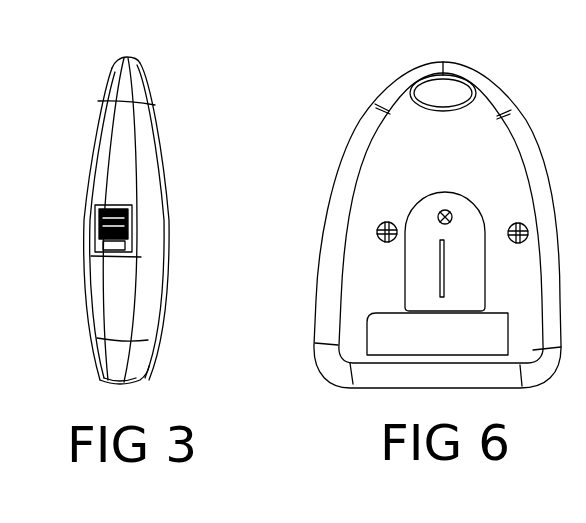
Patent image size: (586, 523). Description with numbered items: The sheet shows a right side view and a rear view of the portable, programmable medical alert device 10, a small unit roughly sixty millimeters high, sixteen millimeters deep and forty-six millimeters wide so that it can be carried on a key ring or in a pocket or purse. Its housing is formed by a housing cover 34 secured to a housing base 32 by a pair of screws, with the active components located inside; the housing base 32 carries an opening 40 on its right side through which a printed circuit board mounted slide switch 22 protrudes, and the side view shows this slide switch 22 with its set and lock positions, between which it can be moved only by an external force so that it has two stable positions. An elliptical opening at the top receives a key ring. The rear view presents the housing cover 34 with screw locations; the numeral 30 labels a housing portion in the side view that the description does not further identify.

In FIG. 3, the portable programmable medical alert device 10 is at (144, 217).
In FIG. 6, the portable programmable medical alert device 10 is at (402, 217).
In FIG. 3, the slide switch 22 is at (100, 235).
In FIG. 3, the first housing half 30 is at (90, 163).
In FIG. 3, the housing base 32 is at (143, 298).
In FIG. 6, the housing base 32 is at (350, 195).
In FIG. 6, the housing cover 34 is at (467, 223).
In FIG. 3, the opening 40 is at (132, 256).